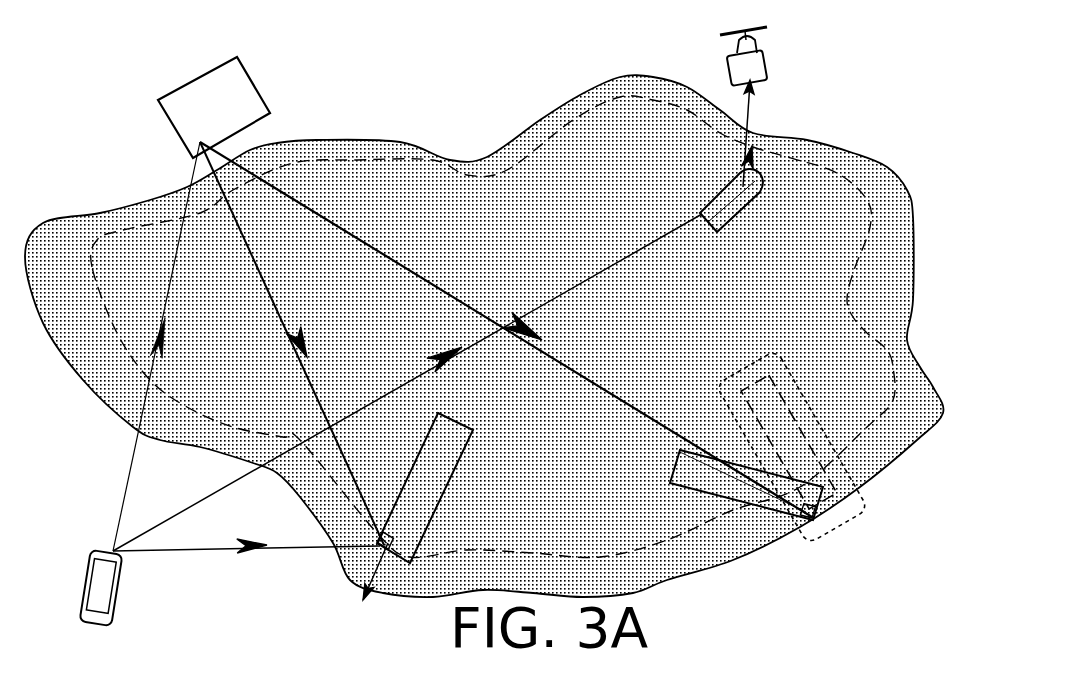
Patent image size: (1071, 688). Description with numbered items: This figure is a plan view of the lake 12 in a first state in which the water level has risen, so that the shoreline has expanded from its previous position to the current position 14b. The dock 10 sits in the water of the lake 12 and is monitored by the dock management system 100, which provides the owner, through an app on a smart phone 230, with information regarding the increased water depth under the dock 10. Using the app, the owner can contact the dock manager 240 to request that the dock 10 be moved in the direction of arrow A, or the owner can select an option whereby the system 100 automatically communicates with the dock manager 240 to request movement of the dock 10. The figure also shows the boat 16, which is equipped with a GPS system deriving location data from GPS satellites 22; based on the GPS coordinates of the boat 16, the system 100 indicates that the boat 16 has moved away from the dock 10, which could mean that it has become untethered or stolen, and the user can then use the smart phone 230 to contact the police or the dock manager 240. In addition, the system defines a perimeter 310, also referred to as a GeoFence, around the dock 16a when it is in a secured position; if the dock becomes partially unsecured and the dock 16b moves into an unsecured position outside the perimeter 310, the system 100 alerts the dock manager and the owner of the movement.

The dock 10 is at (454, 462).
The lake 12 is at (768, 344).
The current position of the shoreline 14b is at (812, 120).
The boat 16 is at (718, 229).
The dock in secured position 16a is at (788, 378).
The dock in unsecured position 16b is at (682, 482).
The GPS satellites 22 is at (765, 68).
The dock management system 100 is at (383, 543).
The smart phone 230 is at (107, 548).
The dock manager 240 is at (239, 115).
The perimeter 310 is at (725, 382).